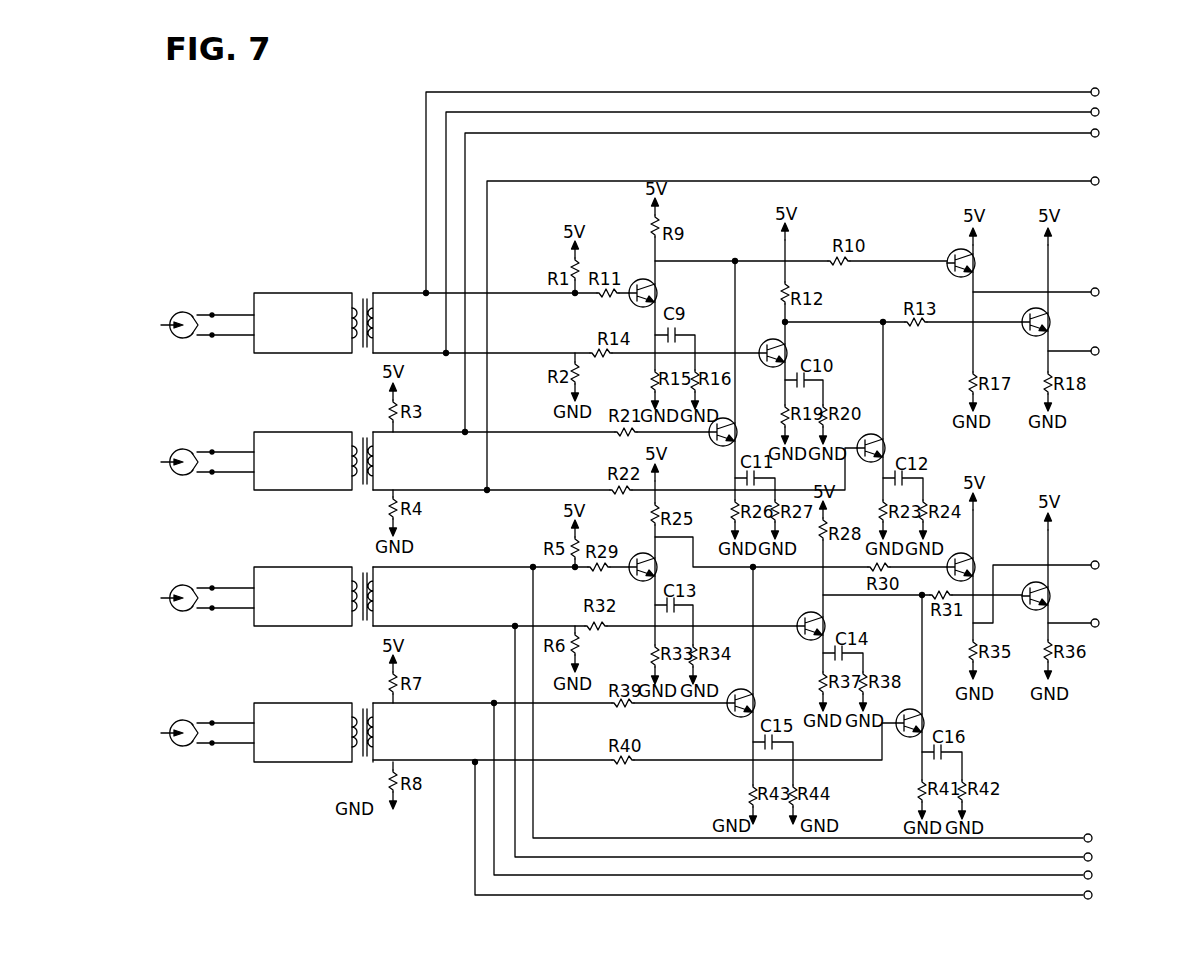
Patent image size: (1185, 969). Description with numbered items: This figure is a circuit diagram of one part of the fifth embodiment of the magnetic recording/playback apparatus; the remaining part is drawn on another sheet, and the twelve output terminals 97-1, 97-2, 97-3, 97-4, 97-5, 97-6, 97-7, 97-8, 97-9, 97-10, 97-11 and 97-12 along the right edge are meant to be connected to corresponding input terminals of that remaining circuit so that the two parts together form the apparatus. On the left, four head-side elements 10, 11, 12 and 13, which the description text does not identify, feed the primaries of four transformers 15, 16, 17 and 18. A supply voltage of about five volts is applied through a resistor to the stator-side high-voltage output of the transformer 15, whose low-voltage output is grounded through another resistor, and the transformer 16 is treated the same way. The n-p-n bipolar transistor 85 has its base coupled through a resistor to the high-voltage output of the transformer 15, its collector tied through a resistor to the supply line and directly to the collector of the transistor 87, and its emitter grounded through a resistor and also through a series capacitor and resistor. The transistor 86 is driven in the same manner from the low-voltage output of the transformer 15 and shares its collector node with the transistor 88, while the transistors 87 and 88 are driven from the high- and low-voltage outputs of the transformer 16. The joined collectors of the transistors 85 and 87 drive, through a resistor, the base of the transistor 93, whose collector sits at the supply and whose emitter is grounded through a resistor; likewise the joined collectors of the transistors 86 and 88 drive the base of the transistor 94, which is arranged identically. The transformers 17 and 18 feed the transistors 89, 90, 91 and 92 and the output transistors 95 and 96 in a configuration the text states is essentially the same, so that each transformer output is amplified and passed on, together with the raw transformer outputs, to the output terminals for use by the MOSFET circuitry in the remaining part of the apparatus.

The playback head PBL1 10 is at (163, 325).
The playback head PBL2 11 is at (163, 462).
The playback head PBR1 12 is at (163, 598).
The playback head PBR2 13 is at (163, 733).
The transformer 15 is at (352, 290).
The transformer 16 is at (352, 430).
The transformer 17 is at (352, 565).
The transformer 18 is at (352, 701).
The n-p-n bipolar transistor 85 is at (637, 280).
The n-p-n bipolar transistor 86 is at (766, 341).
The n-p-n bipolar transistor 87 is at (715, 445).
The n-p-n bipolar transistor 88 is at (883, 436).
The n-p-n bipolar transistor 89 is at (637, 554).
The n-p-n bipolar transistor 90 is at (805, 613).
The n-p-n bipolar transistor 91 is at (735, 716).
The n-p-n bipolar transistor 92 is at (904, 737).
The n-p-n bipolar transistor 93 is at (958, 250).
The n-p-n bipolar transistor 94 is at (1026, 333).
The n-p-n bipolar transistor 95 is at (955, 554).
The n-p-n bipolar transistor 96 is at (1030, 582).
The output terminal 97-1 is at (792, 188).
The output terminal 97-2 is at (802, 228).
The output terminal 97-3 is at (811, 278).
The output terminal 97-4 is at (822, 331).
The output terminal 97-5 is at (1066, 292).
The output terminal 97-6 is at (1104, 351).
The output terminal 97-7 is at (1066, 588).
The output terminal 97-8 is at (1104, 623).
The output terminal 97-9 is at (842, 708).
The output terminal 97-10 is at (840, 747).
The output terminal 97-11 is at (829, 795).
The output terminal 97-12 is at (820, 834).